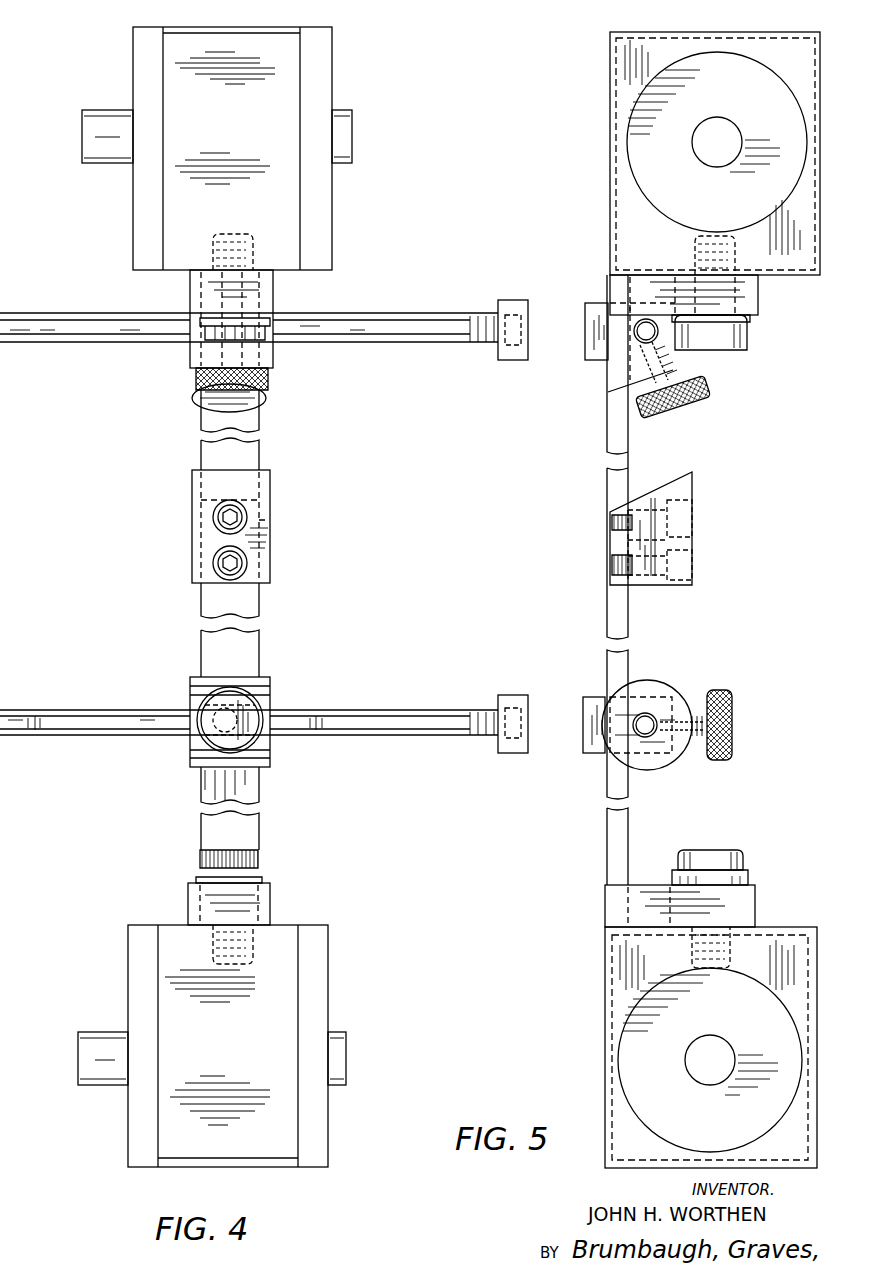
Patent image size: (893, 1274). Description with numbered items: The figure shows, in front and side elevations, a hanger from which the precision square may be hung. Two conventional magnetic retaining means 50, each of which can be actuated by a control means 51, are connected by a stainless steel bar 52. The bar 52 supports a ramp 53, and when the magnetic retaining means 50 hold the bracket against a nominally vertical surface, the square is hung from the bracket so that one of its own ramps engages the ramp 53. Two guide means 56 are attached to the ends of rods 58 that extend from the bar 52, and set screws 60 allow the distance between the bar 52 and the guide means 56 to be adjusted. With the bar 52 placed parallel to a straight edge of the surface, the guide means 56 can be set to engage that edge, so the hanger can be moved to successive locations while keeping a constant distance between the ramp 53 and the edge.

In FIG. 4, the magnetic retaining means 50 is at (318, 73).
In FIG. 5, the magnetic retaining means 50 is at (628, 73).
In FIG. 4, the control means 51 is at (103, 118).
In FIG. 5, the control means 51 is at (725, 128).
In FIG. 4, the stainless steel bar 52 is at (250, 648).
In FIG. 5, the stainless steel bar 52 is at (620, 623).
In FIG. 4, the ramp 53 is at (268, 500).
In FIG. 5, the ramp 53 is at (668, 478).
In FIG. 4, the guide means 56 is at (520, 300).
In FIG. 5, the guide means 56 is at (598, 302).
In FIG. 4, the rods 58 is at (398, 345).
In FIG. 5, the rods 58 is at (640, 342).
In FIG. 4, the set screws 60 is at (200, 398).
In FIG. 5, the set screws 60 is at (705, 405).